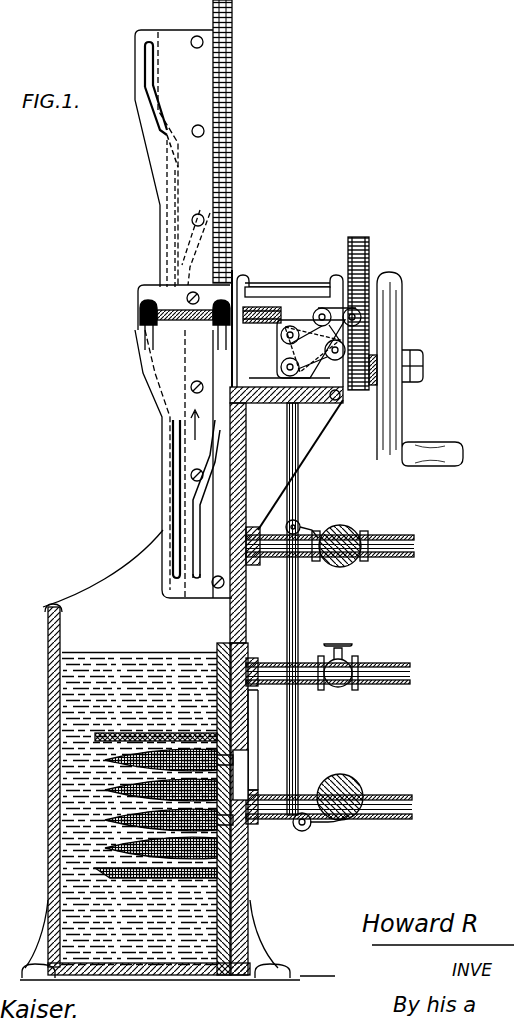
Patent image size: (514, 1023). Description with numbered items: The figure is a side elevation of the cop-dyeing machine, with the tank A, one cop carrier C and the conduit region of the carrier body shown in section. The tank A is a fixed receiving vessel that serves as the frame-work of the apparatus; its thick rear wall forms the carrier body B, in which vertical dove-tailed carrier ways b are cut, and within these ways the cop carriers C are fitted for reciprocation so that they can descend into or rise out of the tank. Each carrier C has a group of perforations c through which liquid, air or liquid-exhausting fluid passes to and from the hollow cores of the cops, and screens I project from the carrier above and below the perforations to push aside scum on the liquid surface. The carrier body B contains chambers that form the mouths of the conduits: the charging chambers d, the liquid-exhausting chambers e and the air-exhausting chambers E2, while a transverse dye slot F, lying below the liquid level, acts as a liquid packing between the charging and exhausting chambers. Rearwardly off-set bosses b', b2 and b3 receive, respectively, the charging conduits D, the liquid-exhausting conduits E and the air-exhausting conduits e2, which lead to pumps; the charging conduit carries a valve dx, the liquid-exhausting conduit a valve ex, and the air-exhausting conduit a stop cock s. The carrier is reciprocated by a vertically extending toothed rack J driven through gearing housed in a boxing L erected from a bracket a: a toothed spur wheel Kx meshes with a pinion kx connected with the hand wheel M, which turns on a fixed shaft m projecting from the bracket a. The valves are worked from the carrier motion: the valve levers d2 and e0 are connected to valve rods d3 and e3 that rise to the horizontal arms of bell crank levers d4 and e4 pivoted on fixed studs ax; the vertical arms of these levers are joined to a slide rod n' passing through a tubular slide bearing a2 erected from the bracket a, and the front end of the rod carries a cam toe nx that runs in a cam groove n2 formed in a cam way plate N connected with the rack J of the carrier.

The toothed rack J is at (235, 98).
The cam way plate N is at (143, 125).
The cam groove n2 is at (150, 62).
The cam toe nx is at (140, 318).
The slide rod n' is at (195, 330).
The boxing L is at (275, 287).
The bracket a is at (276, 403).
The tubular slide bearing a2 is at (265, 323).
The bell crank lever d4 is at (287, 296).
The fixed stud ax is at (342, 346).
The toothed spur wheel Kx is at (373, 230).
The hand wheel M is at (402, 298).
The fixed shaft m is at (424, 368).
The toothed wheel pinion kx is at (373, 390).
The bell crank lever e4 is at (338, 400).
The valve rod e3 is at (300, 478).
The liquid-exhausting chamber e is at (300, 600).
The valve rod d3 is at (300, 730).
The liquid-exhausting conduit E is at (415, 545).
The valve ex is at (352, 528).
The valve lever e0 is at (302, 525).
The boss b2 is at (252, 562).
The air-exhausting conduit e2 is at (412, 673).
The stop cock s is at (352, 649).
The boss b3 is at (254, 665).
The charging conduit D is at (413, 806).
The valve dx is at (354, 784).
The valve lever d2 is at (312, 827).
The boss b' is at (256, 818).
The carrier body B is at (248, 615).
The carrier way b is at (209, 616).
The air-exhausting chamber E2 is at (217, 660).
The cop carrier C is at (248, 642).
The perforation c is at (250, 756).
The dye slot F is at (250, 727).
The screen I is at (252, 733).
The charging chamber d is at (160, 877).
The tank A is at (47, 733).